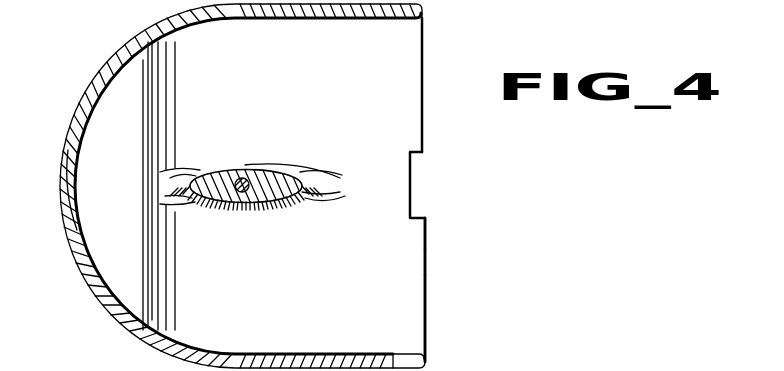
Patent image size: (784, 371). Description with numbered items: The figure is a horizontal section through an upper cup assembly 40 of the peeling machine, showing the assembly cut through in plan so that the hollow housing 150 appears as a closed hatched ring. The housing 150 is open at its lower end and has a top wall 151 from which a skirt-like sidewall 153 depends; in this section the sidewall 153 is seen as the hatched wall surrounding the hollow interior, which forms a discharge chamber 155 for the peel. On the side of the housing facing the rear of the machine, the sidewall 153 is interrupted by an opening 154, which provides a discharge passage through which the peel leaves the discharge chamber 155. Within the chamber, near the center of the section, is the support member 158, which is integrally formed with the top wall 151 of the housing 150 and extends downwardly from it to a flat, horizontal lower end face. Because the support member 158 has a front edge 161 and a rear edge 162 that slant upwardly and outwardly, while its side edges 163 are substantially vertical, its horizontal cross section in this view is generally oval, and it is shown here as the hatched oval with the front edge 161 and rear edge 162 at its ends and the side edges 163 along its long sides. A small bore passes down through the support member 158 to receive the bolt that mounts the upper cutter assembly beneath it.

The upper cup assembly 40 is at (431, 153).
The hollow housing 150 is at (145, 357).
The top wall 151 is at (408, 232).
The skirt-like sidewall 153 is at (75, 231).
The opening 154 is at (400, 288).
The discharge chamber 155 is at (397, 264).
The support member 158 is at (270, 182).
The front edge 161 is at (190, 187).
The rear edge 162 is at (318, 187).
The side edges 163 is at (223, 168).